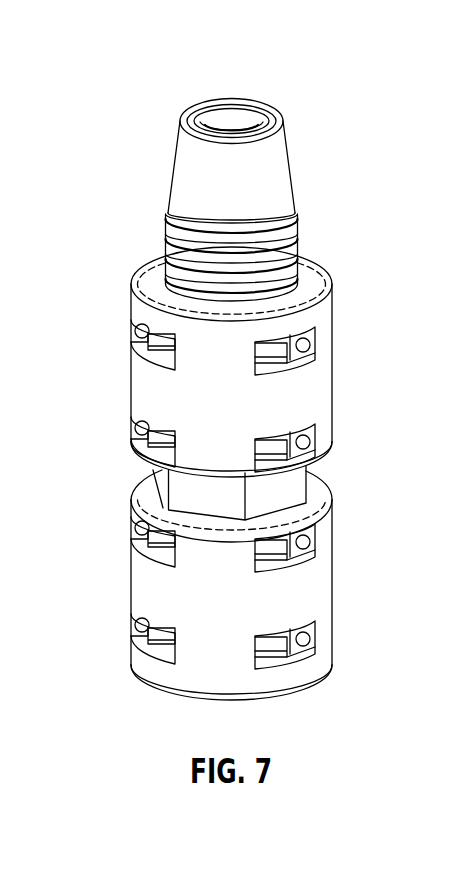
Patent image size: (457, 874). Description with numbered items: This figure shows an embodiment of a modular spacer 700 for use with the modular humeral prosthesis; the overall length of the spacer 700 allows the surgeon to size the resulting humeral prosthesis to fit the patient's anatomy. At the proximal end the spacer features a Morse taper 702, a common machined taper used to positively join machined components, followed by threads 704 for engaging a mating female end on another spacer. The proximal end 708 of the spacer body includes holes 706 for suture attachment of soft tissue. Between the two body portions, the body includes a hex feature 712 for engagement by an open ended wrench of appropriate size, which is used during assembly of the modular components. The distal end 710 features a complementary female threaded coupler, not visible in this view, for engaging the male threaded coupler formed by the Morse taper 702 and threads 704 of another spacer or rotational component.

The spacer 700 is at (115, 55).
The Morse taper 702 is at (173, 150).
The threads 704 is at (168, 220).
The holes 706 is at (302, 362).
The proximal end 708 is at (163, 400).
The distal end 710 is at (163, 672).
The hex feature 712 is at (152, 471).